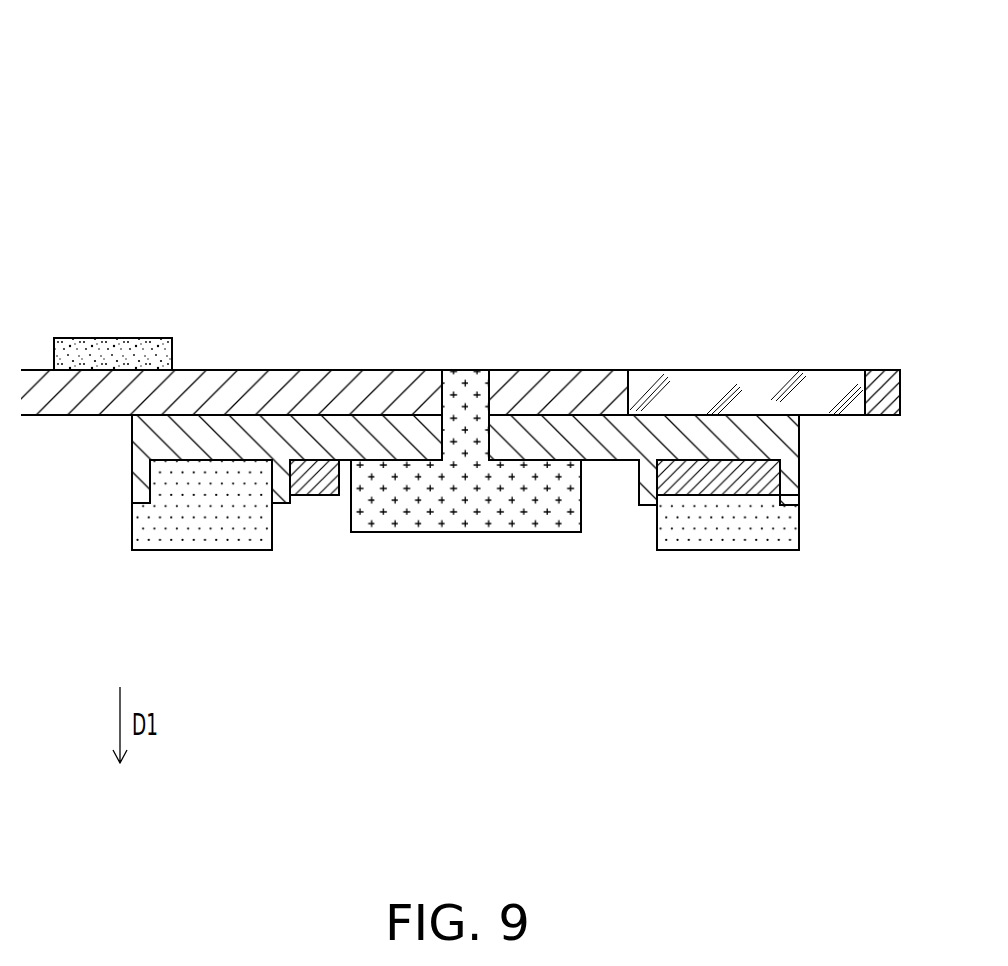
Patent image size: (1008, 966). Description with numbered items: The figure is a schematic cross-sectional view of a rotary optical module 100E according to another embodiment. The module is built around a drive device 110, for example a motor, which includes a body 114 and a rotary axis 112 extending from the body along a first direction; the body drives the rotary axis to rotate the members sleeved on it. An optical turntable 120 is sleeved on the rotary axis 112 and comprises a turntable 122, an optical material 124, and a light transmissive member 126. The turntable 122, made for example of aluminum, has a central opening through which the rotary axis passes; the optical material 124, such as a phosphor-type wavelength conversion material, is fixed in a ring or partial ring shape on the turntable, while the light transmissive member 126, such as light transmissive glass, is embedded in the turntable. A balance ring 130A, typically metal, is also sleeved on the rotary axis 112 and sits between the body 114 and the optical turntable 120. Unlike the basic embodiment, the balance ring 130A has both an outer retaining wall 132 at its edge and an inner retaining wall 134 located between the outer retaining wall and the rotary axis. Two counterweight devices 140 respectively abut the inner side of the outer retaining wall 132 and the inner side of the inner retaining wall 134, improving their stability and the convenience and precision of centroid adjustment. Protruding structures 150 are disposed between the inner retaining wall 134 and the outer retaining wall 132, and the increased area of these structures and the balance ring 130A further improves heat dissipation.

The rotary optical module 100E is at (901, 778).
The drive device 110 is at (108, 25).
The rotary axis 112 is at (465, 388).
The body 114 is at (470, 577).
The optical turntable 120 is at (252, 20).
The turntable 122 is at (267, 392).
The optical material 124 is at (110, 353).
The light transmissive member 126 is at (705, 390).
The balance ring 130A is at (410, 25).
The outer retaining wall 132 is at (830, 478).
The inner retaining wall 134 is at (287, 600).
The counterweight device 140 is at (325, 478).
The protruding structures 150 is at (172, 537).